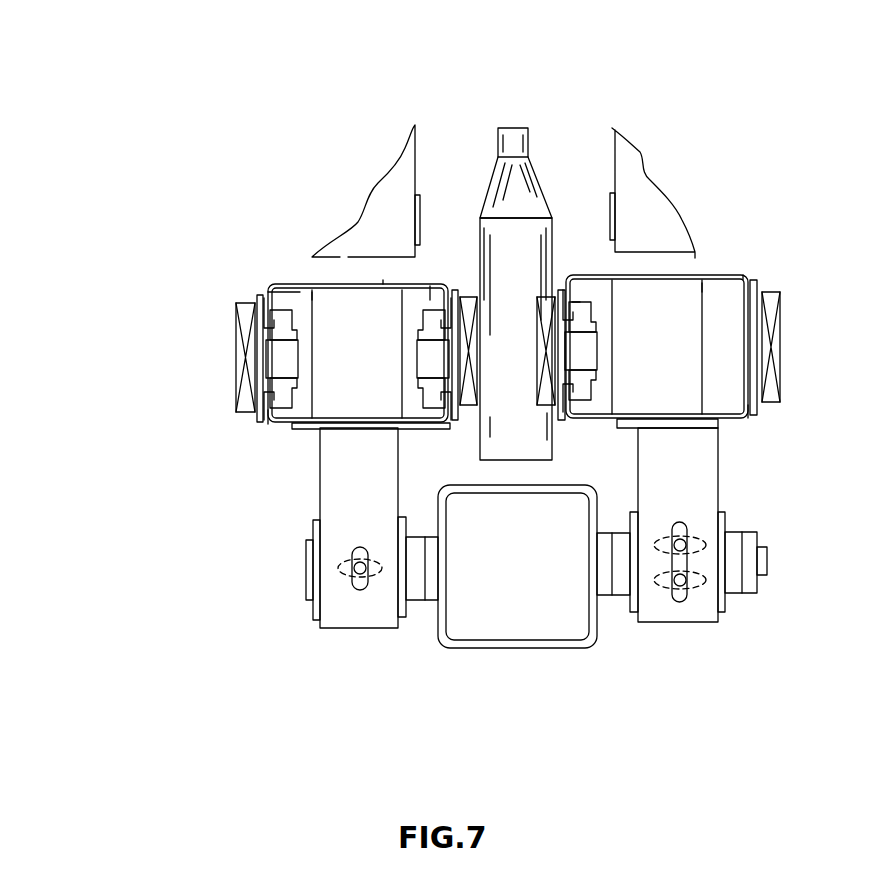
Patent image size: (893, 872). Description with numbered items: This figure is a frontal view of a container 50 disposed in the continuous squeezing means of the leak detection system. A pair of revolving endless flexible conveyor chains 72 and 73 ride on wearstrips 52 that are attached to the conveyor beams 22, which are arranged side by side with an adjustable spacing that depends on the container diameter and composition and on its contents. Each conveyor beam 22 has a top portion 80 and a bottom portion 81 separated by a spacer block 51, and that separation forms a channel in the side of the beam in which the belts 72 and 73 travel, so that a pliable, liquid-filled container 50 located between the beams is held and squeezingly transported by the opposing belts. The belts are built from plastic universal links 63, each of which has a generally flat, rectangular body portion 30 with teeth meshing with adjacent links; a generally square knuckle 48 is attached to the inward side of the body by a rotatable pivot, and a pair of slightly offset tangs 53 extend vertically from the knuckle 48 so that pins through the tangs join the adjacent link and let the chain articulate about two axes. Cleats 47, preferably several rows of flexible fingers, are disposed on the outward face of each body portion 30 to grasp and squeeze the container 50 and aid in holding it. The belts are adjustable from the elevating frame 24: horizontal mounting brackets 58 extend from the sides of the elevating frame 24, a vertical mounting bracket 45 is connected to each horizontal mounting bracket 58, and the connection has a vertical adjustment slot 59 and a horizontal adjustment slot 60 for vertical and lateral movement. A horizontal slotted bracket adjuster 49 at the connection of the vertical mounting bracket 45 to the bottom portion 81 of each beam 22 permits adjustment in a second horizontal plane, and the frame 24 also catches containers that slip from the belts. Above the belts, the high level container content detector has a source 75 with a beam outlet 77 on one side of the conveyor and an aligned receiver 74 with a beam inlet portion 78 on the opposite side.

The conveyor beam 22 is at (418, 426).
The elevating frame 24 is at (505, 648).
The body portion 30 is at (557, 289).
The vertical mounting bracket 45 is at (340, 623).
The cleat 47 is at (549, 321).
The knuckle 48 is at (432, 363).
The slotted bracket adjuster 49 is at (312, 429).
The container 50 is at (515, 128).
The spacer block 51 is at (312, 298).
The wearstrip 52 is at (430, 286).
The tang 53 is at (283, 293).
The horizontal mounting bracket 58 is at (436, 604).
The vertical adjustment slot 59 is at (353, 549).
The horizontal adjustment slot 60 is at (345, 569).
The universal link 63 is at (136, 476).
The flexible conveyor chain 72 is at (192, 143).
The flexible conveyor chain 73 is at (811, 160).
The receiver 74 is at (376, 184).
The source 75 is at (658, 189).
The beam outlet 77 is at (420, 197).
The beam inlet portion 78 is at (610, 194).
The top portion 80 is at (383, 281).
The bottom portion 81 is at (360, 425).